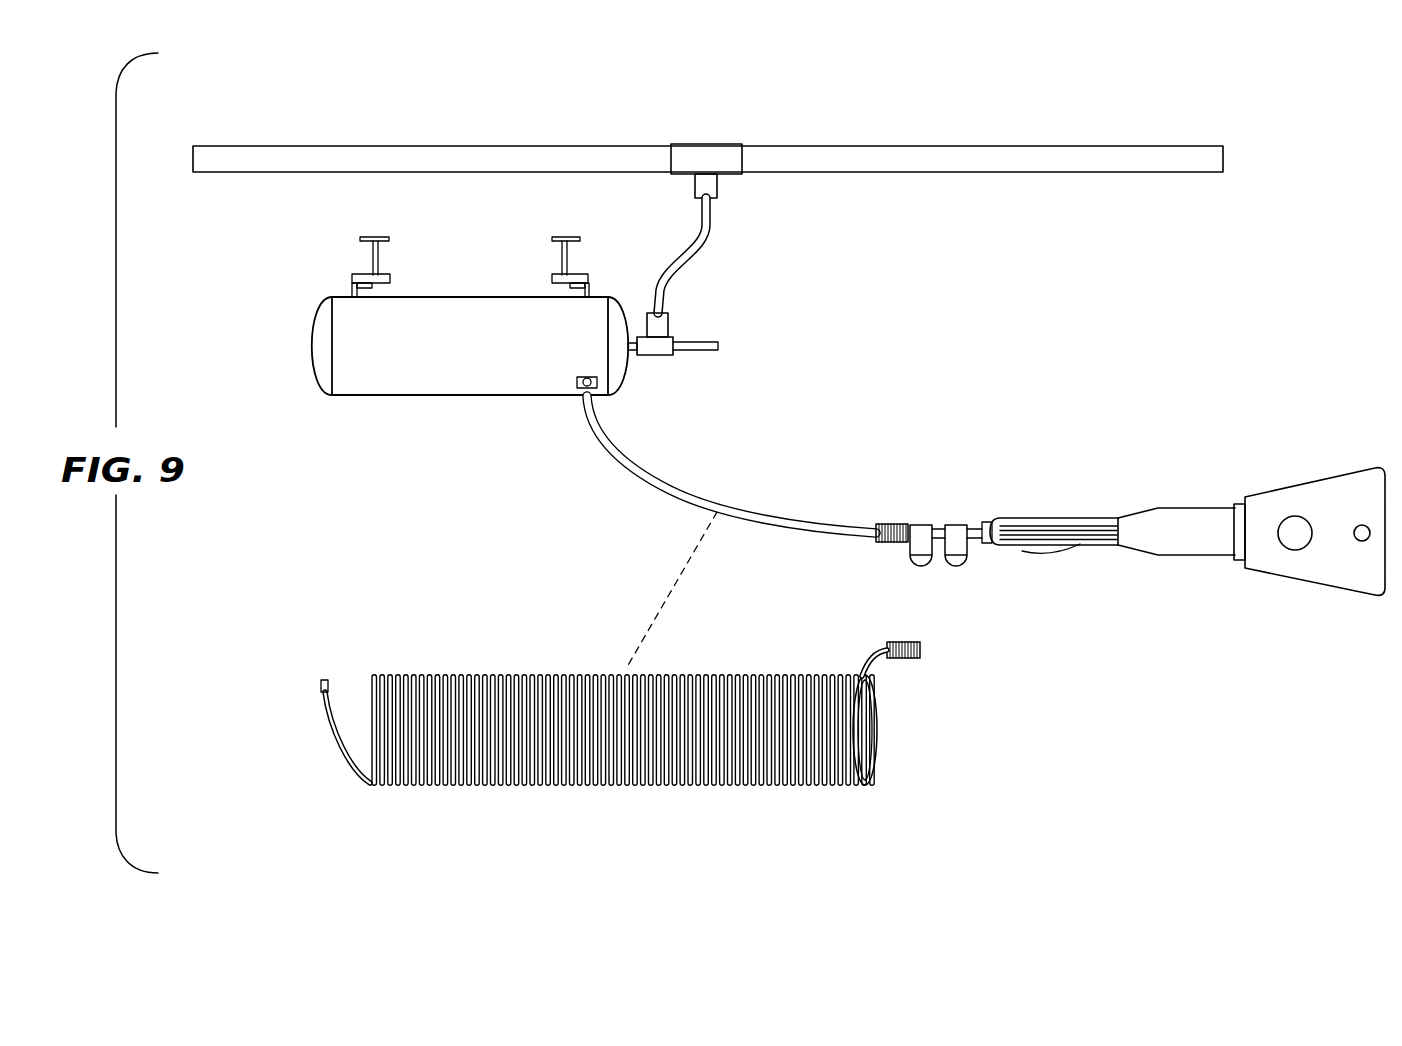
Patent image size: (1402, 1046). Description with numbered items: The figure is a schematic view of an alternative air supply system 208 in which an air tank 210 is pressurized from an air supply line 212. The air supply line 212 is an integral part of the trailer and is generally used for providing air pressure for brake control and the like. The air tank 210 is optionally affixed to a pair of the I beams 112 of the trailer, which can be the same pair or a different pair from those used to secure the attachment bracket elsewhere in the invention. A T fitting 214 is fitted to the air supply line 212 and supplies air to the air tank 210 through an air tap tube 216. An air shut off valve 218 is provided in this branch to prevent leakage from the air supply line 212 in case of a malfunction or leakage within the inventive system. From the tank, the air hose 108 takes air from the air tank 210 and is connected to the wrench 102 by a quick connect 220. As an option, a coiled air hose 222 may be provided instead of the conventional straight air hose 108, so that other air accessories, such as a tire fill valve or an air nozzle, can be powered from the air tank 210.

The wrench 102 is at (1197, 533).
The air hose 108 is at (789, 523).
The I beams 112 is at (381, 231).
The alternative air supply system 208 is at (374, 448).
The air tank 210 is at (478, 360).
The air supply line 212 is at (972, 161).
The T fitting 214 is at (730, 162).
The air tap tube 216 is at (672, 283).
The air shut off valve 218 is at (658, 349).
The quick connect 220 is at (888, 525).
The coiled air hose 222 is at (490, 676).